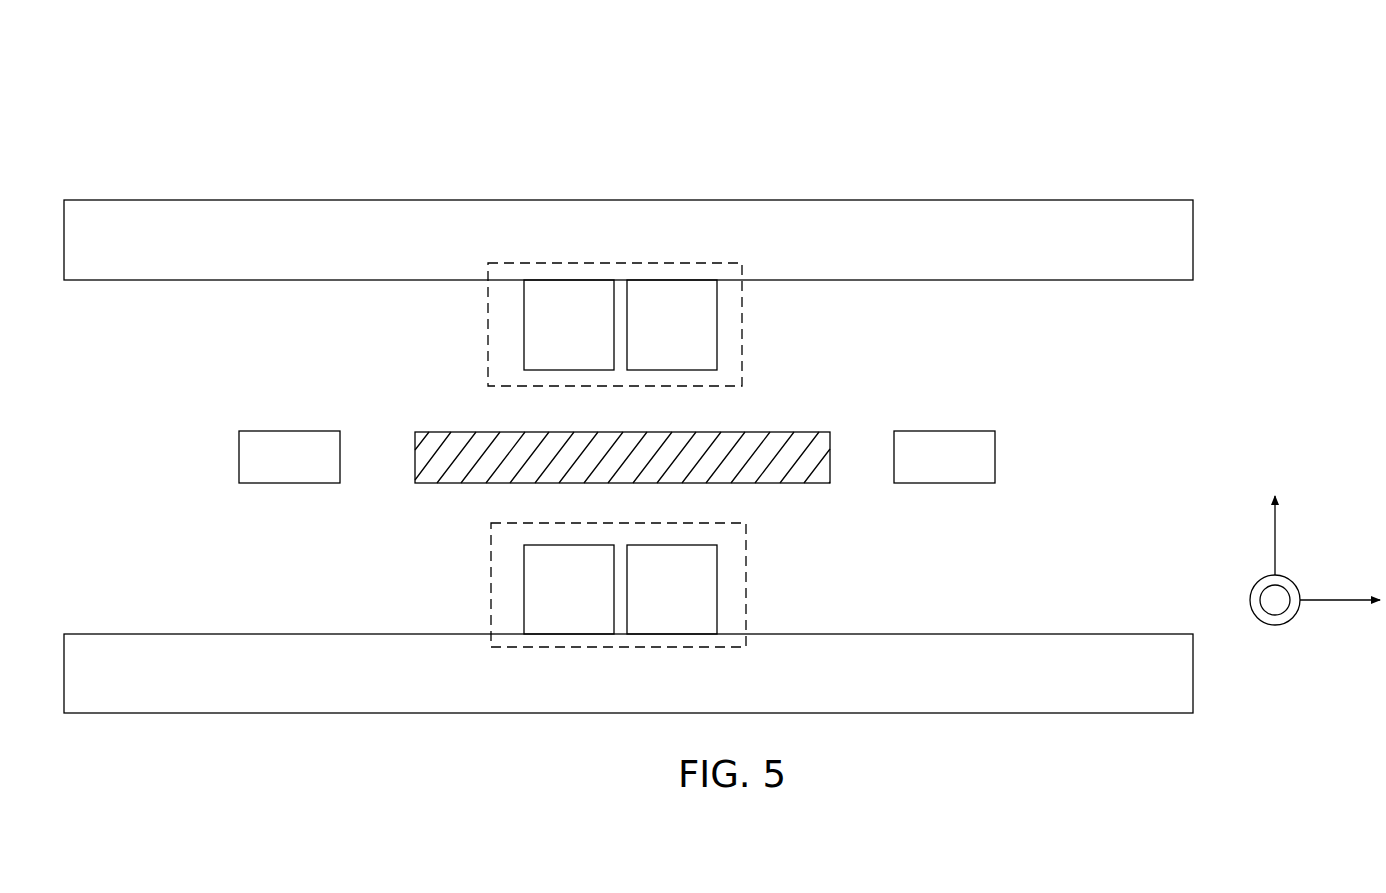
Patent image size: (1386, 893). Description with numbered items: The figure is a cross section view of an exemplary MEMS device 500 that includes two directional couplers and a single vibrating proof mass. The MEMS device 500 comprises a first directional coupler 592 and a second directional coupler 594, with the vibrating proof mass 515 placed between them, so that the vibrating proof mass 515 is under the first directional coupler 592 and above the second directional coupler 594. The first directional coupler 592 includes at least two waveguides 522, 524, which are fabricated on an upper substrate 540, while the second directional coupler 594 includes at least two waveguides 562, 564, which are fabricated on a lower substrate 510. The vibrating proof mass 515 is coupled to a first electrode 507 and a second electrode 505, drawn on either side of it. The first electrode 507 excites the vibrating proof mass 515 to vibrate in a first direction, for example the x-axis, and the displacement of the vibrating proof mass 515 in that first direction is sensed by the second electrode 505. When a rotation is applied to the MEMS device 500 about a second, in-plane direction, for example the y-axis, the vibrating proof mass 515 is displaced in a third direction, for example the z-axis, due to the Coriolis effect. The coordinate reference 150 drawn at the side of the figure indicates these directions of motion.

The MEMS device 500 is at (1151, 84).
The substrate 540 is at (1033, 200).
The substrate 510 is at (250, 713).
The vibrating proof mass 515 is at (788, 432).
The second electrode 505 is at (995, 455).
The first electrode 507 is at (239, 457).
The first directional coupler 592 is at (488, 371).
The waveguide 522 is at (543, 329).
The waveguide 524 is at (702, 327).
The second directional coupler 594 is at (746, 541).
The waveguide 562 is at (540, 588).
The waveguide 564 is at (700, 586).
The coordinate reference 150 is at (1334, 651).